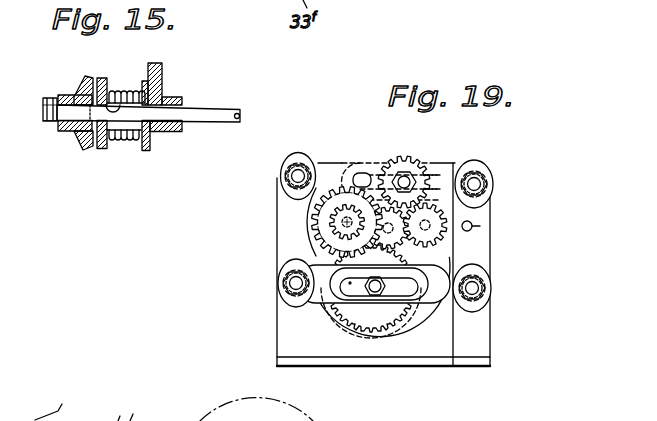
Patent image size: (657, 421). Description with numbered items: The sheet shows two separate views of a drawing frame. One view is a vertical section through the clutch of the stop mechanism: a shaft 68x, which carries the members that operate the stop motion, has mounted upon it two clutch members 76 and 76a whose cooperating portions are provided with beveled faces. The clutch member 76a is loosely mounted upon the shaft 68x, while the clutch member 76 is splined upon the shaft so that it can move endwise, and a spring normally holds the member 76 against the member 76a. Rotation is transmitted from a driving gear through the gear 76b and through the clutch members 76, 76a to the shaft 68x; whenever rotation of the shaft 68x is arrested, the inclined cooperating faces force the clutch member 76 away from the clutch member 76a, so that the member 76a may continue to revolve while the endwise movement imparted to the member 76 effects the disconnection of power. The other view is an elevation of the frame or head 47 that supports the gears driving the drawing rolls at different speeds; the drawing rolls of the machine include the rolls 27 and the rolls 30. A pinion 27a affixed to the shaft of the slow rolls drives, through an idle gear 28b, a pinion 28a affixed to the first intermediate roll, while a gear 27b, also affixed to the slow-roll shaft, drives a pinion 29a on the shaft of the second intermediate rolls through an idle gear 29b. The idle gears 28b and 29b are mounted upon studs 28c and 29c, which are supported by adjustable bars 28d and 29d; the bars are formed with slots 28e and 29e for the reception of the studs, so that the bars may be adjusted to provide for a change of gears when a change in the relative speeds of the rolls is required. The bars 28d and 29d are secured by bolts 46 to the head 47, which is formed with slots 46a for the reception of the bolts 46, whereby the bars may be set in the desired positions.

In FIG. 15, the shaft 68x is at (228, 111).
In FIG. 15, the clutch member 76 is at (105, 150).
In FIG. 15, the clutch member 76a is at (88, 148).
In FIG. 15, the gear 76b is at (75, 140).
In FIG. 19, the frame or head 47 is at (496, 318).
In FIG. 19, the bolts 46 is at (290, 176).
In FIG. 19, the slots 46a is at (298, 163).
In FIG. 19, the drawing rolls 27 is at (315, 217).
In FIG. 19, the pinion 27a is at (305, 237).
In FIG. 19, the gear 27b is at (345, 188).
In FIG. 19, the pinion 28a is at (400, 263).
In FIG. 19, the idle gear 28b is at (378, 313).
In FIG. 19, the stud 28c is at (307, 340).
In FIG. 19, the adjustable bar 28d is at (433, 307).
In FIG. 19, the slot 28e is at (322, 304).
In FIG. 19, the pinion 29a is at (450, 232).
In FIG. 19, the idle gear 29b is at (430, 166).
In FIG. 19, the stud 29c is at (400, 158).
In FIG. 19, the adjustable bar 29d is at (448, 163).
In FIG. 19, the slot 29e is at (362, 173).
In FIG. 19, the drawing rolls 30 is at (480, 226).